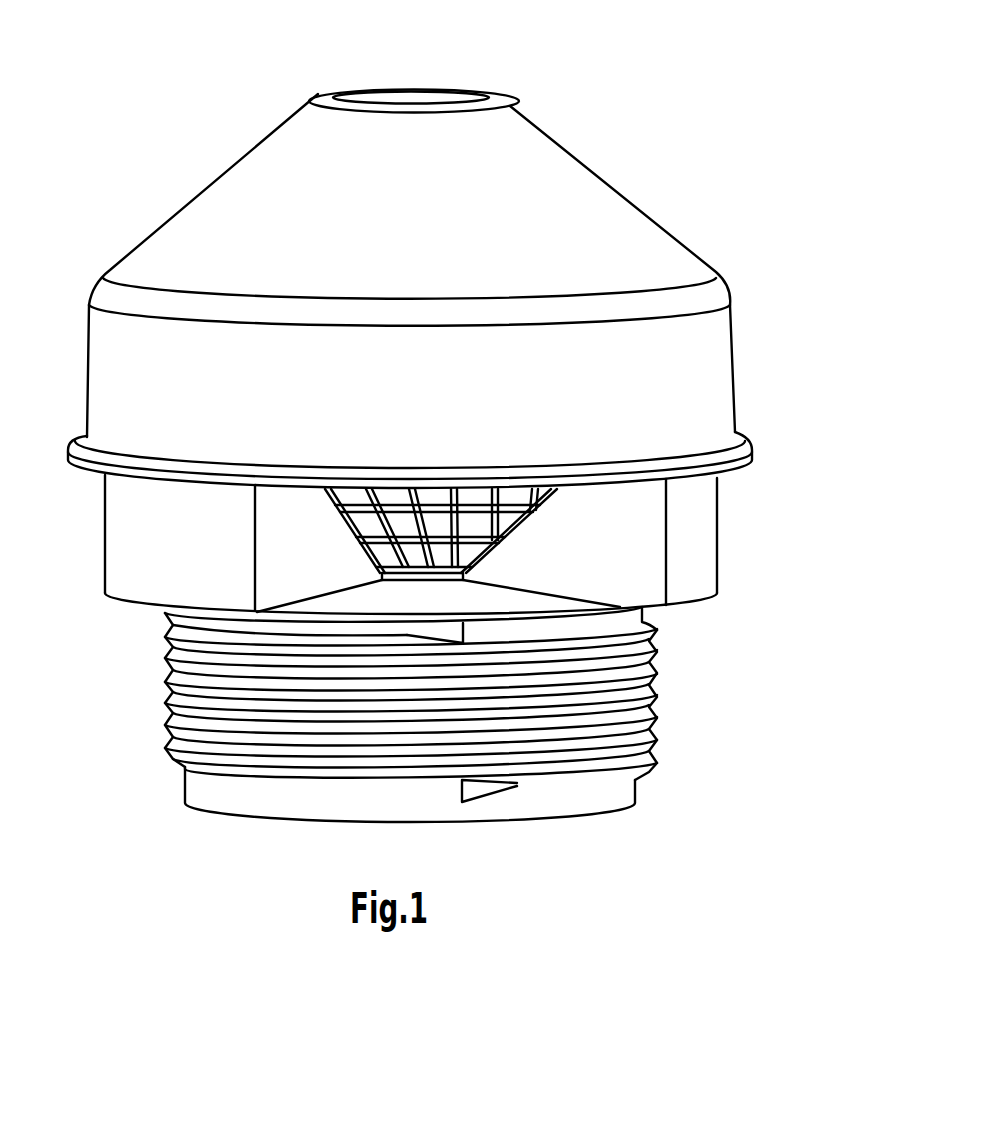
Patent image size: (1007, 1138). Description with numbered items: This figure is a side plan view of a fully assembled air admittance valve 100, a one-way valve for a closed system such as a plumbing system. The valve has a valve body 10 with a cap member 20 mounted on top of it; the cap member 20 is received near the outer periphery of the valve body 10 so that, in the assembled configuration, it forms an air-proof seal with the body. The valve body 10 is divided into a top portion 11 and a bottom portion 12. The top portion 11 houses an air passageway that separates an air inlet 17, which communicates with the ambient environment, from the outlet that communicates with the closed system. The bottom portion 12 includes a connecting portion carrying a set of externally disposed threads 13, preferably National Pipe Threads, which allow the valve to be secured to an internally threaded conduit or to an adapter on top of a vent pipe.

The air admittance valve 100 is at (597, 78).
The cap member 20 is at (590, 228).
The valve body 10 is at (449, 617).
The top portion 11 is at (620, 525).
The air inlet 17 is at (500, 545).
The bottom portion 12 is at (482, 714).
The threads 13 is at (540, 735).